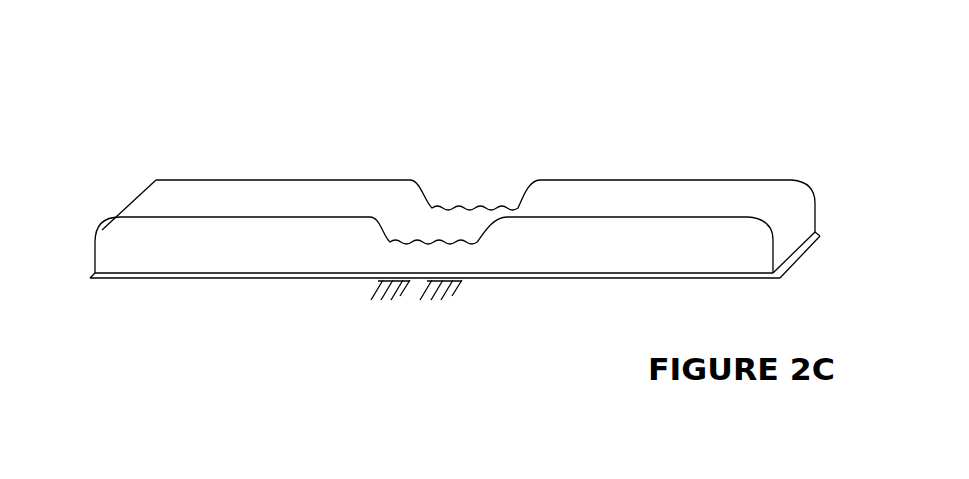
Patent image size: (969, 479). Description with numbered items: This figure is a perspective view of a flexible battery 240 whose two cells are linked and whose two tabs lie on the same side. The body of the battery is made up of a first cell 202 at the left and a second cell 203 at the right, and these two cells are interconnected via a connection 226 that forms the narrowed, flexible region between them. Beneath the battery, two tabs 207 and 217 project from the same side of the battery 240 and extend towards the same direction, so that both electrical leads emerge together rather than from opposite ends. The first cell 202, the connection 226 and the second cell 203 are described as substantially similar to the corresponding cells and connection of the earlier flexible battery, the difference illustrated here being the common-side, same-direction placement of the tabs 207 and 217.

The flexible battery 240 is at (455, 204).
The first cell 202 is at (225, 160).
The second cell 203 is at (693, 160).
The connection 226 is at (500, 170).
The tab 217 is at (390, 287).
The tab 207 is at (435, 292).